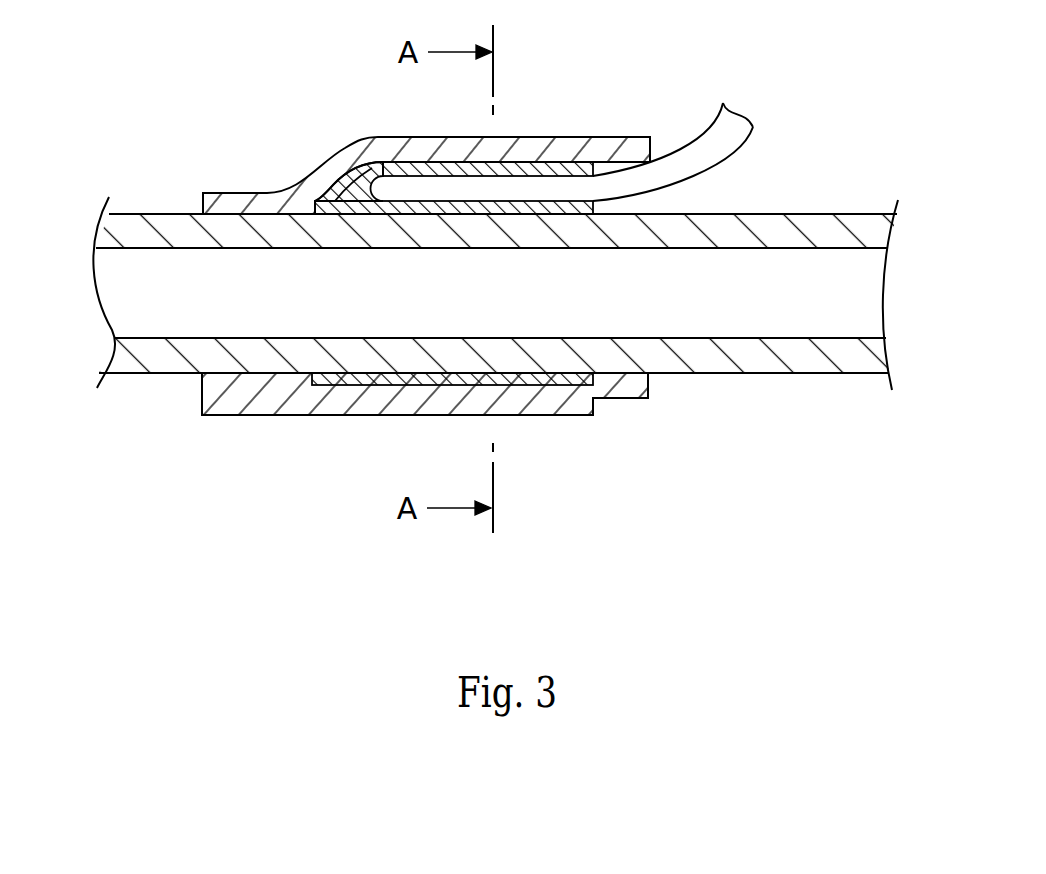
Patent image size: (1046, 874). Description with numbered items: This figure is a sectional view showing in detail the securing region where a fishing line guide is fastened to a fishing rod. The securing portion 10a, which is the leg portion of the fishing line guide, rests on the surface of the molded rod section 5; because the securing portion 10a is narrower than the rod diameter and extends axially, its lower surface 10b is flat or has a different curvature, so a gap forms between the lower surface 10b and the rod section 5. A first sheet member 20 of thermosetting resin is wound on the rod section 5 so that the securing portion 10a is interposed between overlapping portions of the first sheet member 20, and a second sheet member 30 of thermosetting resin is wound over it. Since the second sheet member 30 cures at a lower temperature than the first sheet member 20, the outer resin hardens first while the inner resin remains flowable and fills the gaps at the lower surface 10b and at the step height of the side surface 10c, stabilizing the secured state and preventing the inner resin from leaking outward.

The rod section 5 is at (820, 230).
The securing portion 10a is at (528, 187).
The lower surface 10b is at (533, 205).
The side surface 10c is at (323, 180).
The first sheet member 20 is at (377, 147).
The second sheet member 30 is at (350, 380).